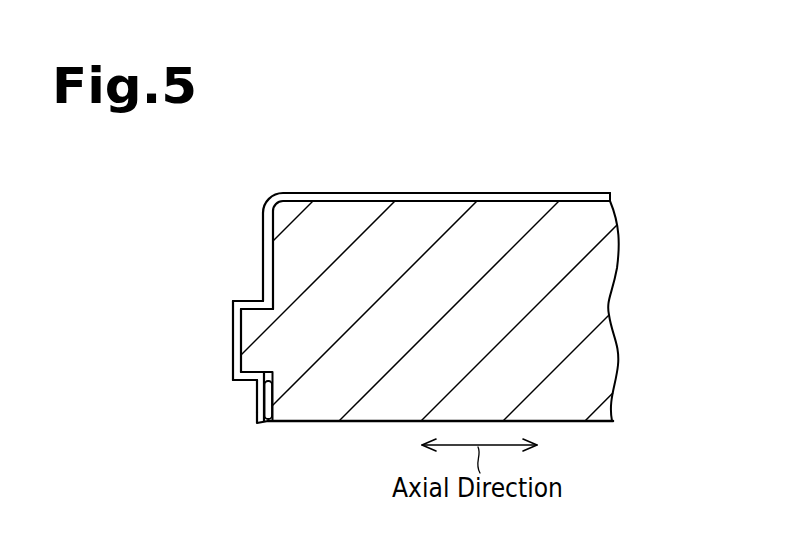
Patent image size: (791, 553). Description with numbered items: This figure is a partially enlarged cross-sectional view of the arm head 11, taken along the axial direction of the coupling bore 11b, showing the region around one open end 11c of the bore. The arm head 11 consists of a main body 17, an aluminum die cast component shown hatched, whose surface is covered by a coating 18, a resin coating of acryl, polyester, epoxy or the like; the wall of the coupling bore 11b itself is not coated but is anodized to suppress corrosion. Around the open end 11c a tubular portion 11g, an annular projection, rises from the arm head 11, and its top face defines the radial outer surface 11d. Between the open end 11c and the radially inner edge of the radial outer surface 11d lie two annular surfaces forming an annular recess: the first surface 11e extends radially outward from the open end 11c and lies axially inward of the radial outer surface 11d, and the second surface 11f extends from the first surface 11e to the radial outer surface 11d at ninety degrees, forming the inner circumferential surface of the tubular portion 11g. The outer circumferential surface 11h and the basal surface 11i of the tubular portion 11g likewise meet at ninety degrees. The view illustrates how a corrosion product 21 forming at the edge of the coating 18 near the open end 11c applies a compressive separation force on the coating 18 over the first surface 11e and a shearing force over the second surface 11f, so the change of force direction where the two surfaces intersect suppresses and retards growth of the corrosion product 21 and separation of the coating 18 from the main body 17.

The arm head 11 is at (442, 182).
The coupling bore 11b is at (358, 422).
The open end 11c is at (257, 441).
The radial outer surface 11d is at (233, 360).
The first surface 11e is at (255, 410).
The second surface 11f is at (243, 381).
The tubular portion 11g is at (248, 323).
The outer circumferential surface 11h is at (247, 301).
The basal surface 11i is at (263, 275).
The main body 17 is at (613, 274).
The coating 18 is at (358, 193).
The corrosion product 21 is at (277, 419).